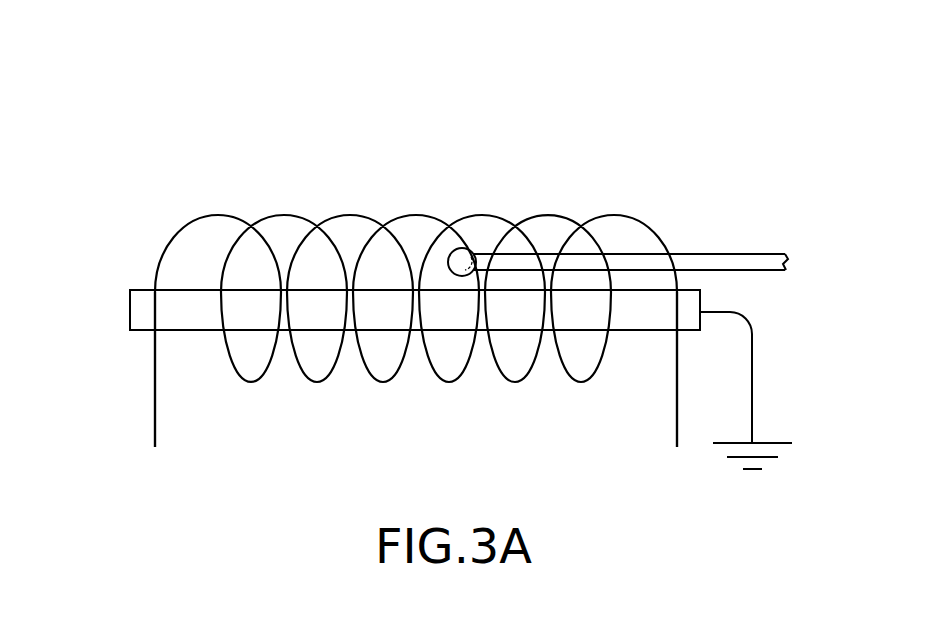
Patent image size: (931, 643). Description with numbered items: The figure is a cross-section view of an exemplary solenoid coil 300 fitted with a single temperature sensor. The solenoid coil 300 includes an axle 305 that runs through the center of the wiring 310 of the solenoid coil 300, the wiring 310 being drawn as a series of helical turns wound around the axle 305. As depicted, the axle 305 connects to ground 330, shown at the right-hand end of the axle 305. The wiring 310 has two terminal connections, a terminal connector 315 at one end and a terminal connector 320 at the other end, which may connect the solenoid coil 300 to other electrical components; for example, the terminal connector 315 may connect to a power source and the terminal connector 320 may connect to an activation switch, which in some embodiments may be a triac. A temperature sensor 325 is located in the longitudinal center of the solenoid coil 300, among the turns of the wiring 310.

The solenoid coil 300 is at (661, 162).
The axle 305 is at (130, 320).
The wiring 310 is at (411, 216).
The terminal connector 315 is at (154, 428).
The terminal connector 320 is at (677, 437).
The temperature sensor 325 is at (766, 255).
The ground 330 is at (752, 420).